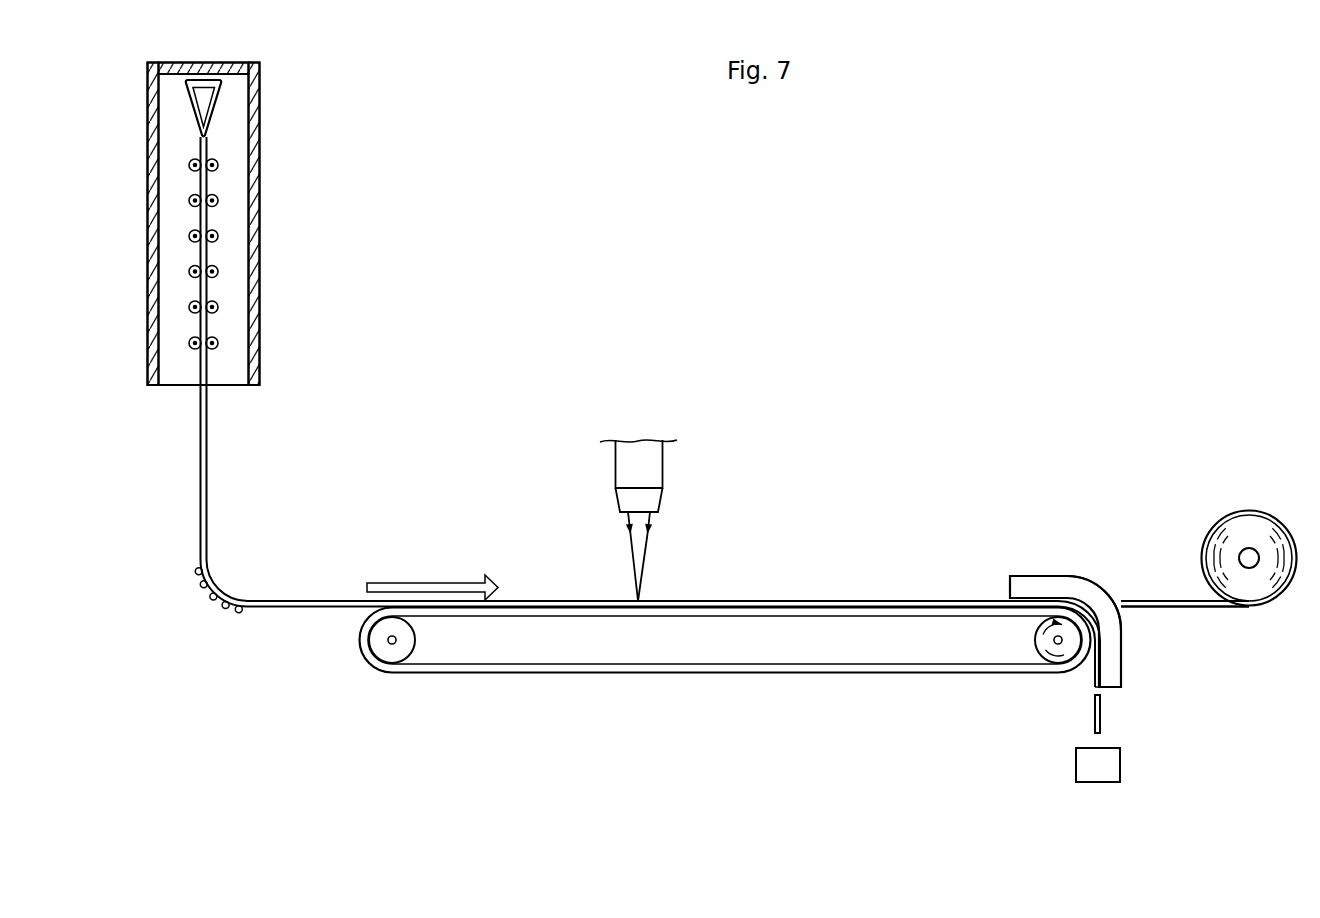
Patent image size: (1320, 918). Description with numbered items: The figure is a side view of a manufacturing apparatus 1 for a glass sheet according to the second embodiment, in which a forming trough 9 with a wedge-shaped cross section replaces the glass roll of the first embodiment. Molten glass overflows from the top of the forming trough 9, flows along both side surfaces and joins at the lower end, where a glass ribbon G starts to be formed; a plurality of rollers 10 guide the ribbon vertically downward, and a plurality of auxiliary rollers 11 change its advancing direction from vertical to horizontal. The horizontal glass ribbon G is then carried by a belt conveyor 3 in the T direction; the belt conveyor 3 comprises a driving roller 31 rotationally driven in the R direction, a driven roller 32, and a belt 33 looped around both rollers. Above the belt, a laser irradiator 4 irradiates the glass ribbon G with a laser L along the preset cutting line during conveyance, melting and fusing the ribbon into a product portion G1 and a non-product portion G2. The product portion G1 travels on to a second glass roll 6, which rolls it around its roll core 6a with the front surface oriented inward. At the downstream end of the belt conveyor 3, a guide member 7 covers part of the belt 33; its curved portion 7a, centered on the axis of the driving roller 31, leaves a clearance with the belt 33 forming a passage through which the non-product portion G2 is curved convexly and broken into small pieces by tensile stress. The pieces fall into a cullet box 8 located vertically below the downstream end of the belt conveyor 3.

The manufacturing apparatus for a glass sheet 1 is at (851, 444).
The belt conveyor 3 is at (725, 682).
The laser irradiator 4 is at (653, 520).
The second glass roll 6 is at (1236, 557).
The roll core 6a is at (1246, 568).
The guide member 7 is at (1066, 600).
The curved portion 7a is at (1092, 582).
The cullet box 8 is at (1122, 764).
The forming trough 9 is at (207, 102).
The rollers 10 is at (218, 165).
The auxiliary rollers 11 is at (210, 601).
The driving roller 31 is at (1042, 669).
The driven roller 32 is at (415, 648).
The belt 33 is at (627, 673).
The glass ribbon G is at (560, 600).
The product portion G1 is at (1162, 600).
The non-product portion G2 is at (1102, 716).
The laser L is at (645, 563).
The R direction R is at (1033, 638).
The T direction T is at (432, 577).